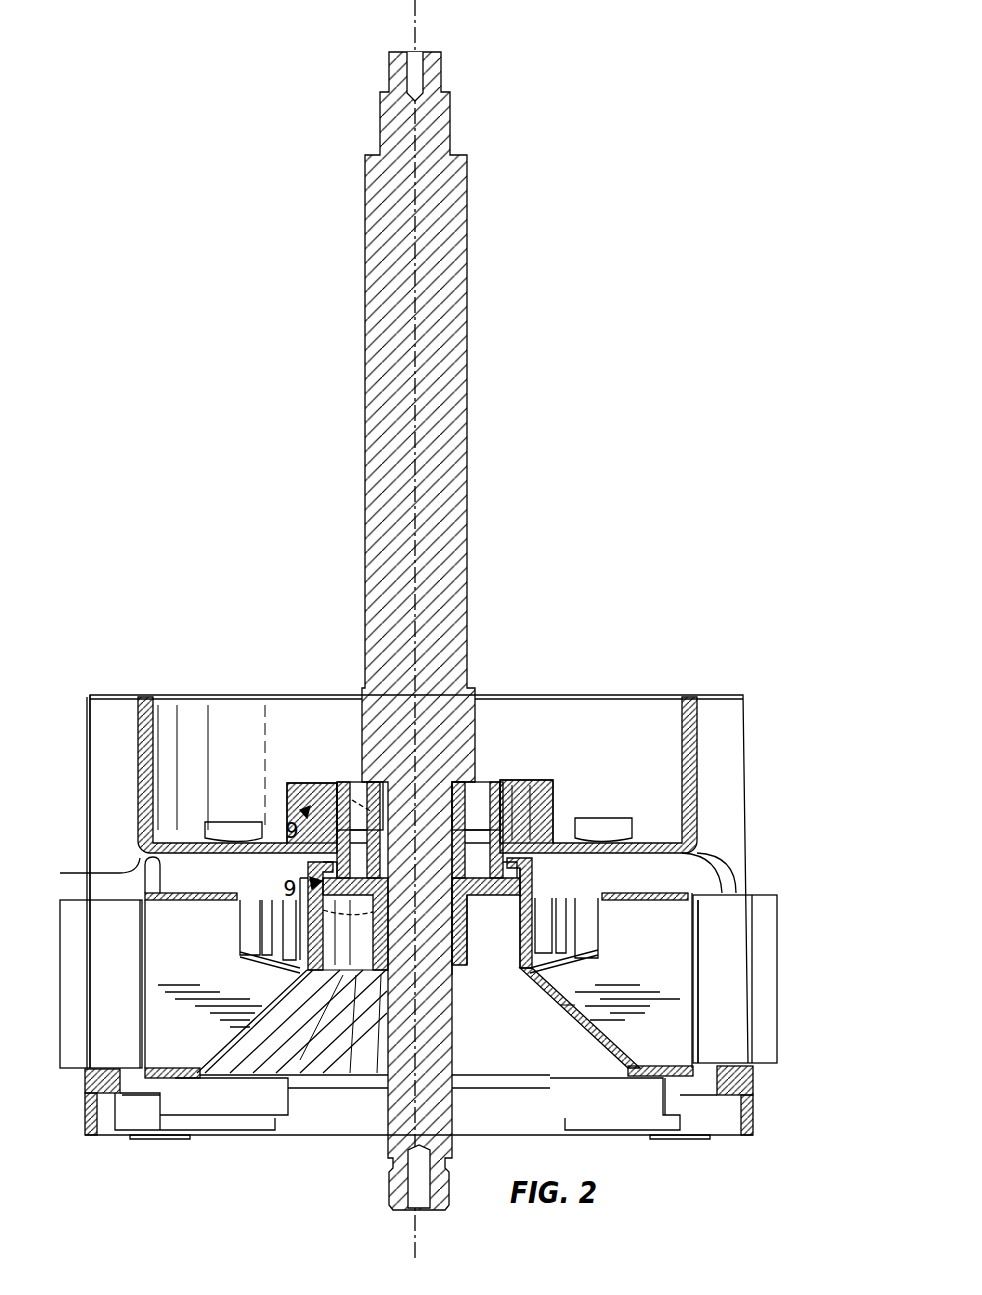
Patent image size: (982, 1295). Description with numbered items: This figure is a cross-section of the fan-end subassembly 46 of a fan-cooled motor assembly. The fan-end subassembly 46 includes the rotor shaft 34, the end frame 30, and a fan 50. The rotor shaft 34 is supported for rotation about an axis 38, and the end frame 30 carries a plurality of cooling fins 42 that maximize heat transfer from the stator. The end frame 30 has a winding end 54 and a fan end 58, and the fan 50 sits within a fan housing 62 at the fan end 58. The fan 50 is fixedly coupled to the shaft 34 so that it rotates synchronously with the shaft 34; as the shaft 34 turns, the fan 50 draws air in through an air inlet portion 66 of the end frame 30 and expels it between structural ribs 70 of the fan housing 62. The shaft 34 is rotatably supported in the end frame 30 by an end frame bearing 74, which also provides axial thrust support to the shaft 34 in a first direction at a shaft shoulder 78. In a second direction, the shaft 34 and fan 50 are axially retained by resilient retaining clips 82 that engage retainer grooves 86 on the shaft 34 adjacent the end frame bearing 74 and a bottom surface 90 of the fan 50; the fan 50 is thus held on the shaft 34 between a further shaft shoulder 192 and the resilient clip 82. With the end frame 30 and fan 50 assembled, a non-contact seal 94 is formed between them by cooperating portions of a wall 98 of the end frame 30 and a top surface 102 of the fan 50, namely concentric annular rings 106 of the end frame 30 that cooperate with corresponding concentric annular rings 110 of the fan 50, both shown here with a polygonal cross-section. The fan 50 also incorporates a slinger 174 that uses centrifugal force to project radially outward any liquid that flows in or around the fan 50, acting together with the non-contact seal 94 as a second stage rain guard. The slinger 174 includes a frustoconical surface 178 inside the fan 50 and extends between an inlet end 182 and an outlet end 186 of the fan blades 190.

The end frame 30 is at (720, 746).
The rotor shaft 34 is at (445, 232).
The axis 38 is at (412, 24).
The cooling fins 42 is at (762, 985).
The fan-end subassembly 46 is at (645, 227).
The fan 50 is at (667, 940).
The winding end 54 is at (702, 693).
The fan end 58 is at (736, 1138).
The fan housing 62 is at (634, 872).
The air inlet portion 66 is at (95, 878).
The structural ribs 70 is at (722, 1025).
The end frame bearing 74 is at (505, 785).
The shaft shoulder 78 is at (350, 780).
The resilient retaining clips 82 is at (495, 795).
The retainer grooves 86 is at (430, 800).
The bottom surface 90 is at (366, 1000).
The non-contact seal 94 is at (330, 880).
The wall 98 is at (290, 857).
The top surface 102 is at (305, 800).
The concentric annular rings 106 is at (515, 830).
The concentric annular rings 110 is at (352, 830).
The slinger 174 is at (560, 1005).
The frustoconical surface 178 is at (580, 1015).
The inlet end 182 is at (565, 918).
The outlet end 186 is at (700, 948).
The fan blades 190 is at (640, 1054).
The shaft shoulder 192 is at (466, 955).